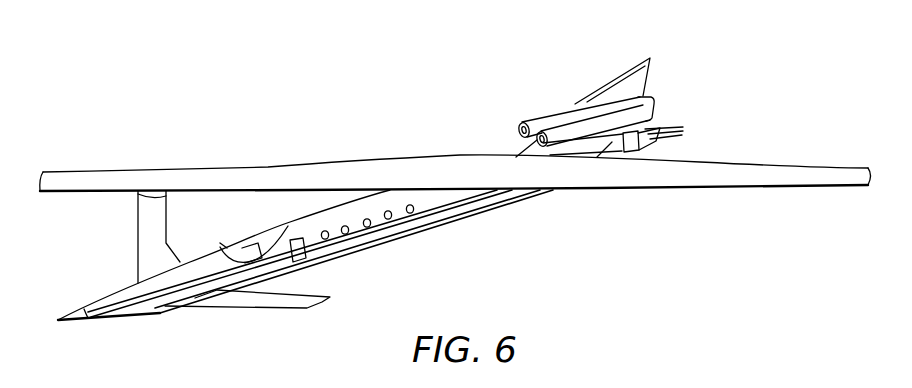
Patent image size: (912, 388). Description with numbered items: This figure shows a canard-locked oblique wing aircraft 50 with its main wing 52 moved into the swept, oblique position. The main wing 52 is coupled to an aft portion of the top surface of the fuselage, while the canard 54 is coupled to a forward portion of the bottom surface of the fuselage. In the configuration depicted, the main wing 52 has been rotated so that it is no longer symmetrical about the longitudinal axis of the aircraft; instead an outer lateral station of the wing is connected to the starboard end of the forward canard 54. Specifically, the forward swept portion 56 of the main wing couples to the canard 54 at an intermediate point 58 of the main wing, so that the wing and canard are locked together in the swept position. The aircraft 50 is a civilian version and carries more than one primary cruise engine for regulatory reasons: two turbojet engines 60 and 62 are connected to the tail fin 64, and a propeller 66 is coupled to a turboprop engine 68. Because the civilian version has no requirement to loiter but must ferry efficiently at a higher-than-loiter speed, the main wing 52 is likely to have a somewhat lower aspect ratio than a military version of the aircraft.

The canard-locked oblique wing aircraft 50 is at (358, 103).
The main wing 52 is at (269, 172).
The canard 54 is at (148, 252).
The forward swept portion 56 is at (70, 182).
The intermediate point 58 is at (150, 197).
The turbojet engine 60 is at (538, 122).
The turbojet engine 62 is at (562, 125).
The tail fin 64 is at (633, 75).
The propeller 66 is at (670, 138).
The turboprop engine 68 is at (656, 131).